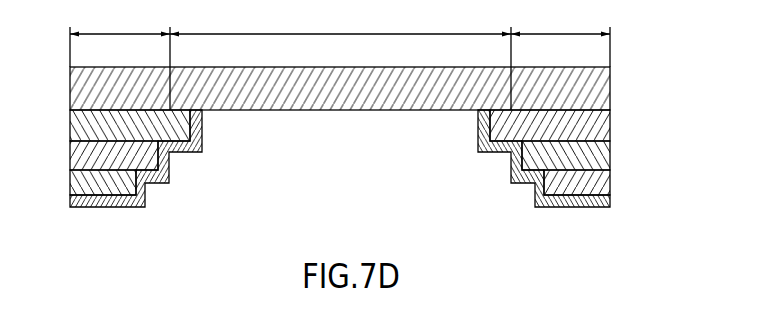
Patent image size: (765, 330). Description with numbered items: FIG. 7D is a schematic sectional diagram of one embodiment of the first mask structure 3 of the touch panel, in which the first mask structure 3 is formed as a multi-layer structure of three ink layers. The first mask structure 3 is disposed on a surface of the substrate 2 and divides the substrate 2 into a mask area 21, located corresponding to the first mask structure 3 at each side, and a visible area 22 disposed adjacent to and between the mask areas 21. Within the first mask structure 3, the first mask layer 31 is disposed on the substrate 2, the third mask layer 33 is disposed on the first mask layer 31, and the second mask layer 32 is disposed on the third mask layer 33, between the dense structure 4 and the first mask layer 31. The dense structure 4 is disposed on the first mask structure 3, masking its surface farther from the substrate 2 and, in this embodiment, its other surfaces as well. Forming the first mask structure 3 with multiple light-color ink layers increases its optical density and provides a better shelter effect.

The substrate 2 is at (605, 83).
The mask area 21 is at (340, 40).
The visible area 22 is at (340, 61).
The first mask structure 3 is at (374, 152).
The first mask layer 31 is at (603, 122).
The second mask layer 32 is at (360, 181).
The third mask layer 33 is at (604, 150).
The dense structure 4 is at (610, 203).